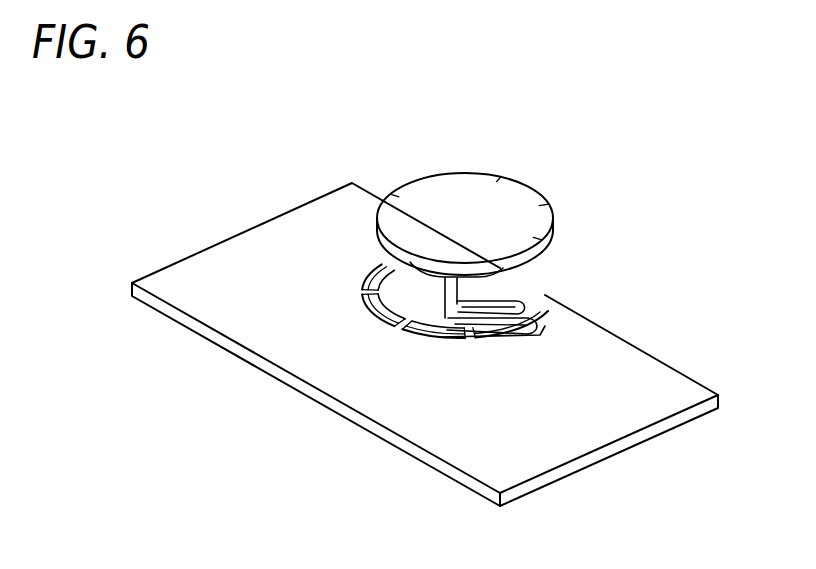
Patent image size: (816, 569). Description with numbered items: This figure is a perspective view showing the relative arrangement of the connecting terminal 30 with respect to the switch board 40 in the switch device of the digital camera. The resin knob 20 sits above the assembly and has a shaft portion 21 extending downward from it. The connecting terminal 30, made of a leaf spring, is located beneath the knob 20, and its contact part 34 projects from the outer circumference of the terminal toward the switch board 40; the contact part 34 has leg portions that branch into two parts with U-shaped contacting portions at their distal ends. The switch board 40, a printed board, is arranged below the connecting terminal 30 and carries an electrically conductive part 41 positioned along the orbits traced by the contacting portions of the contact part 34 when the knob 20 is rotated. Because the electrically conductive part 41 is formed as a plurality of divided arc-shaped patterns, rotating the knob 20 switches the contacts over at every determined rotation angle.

The knob 20 is at (428, 189).
The shaft portion 21 is at (498, 280).
The connecting terminal 30 is at (530, 333).
The contact part 34 is at (505, 299).
The switch board 40 is at (246, 257).
The electrically conductive part 41 is at (366, 264).